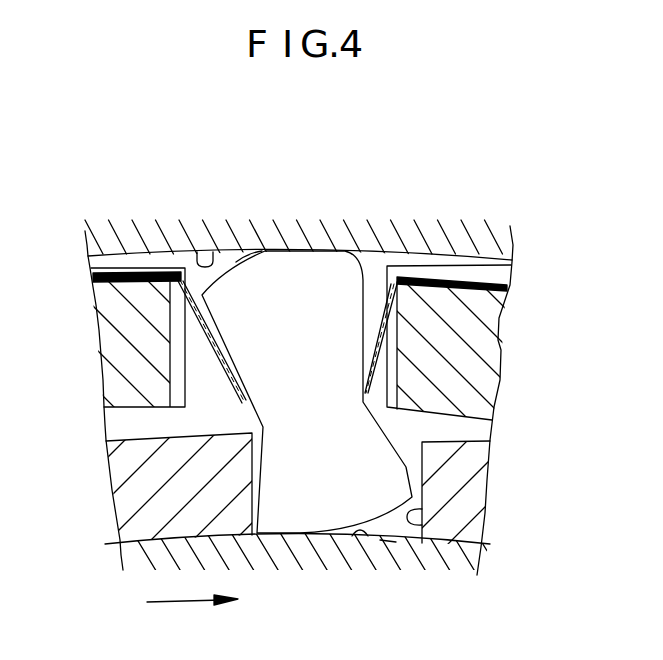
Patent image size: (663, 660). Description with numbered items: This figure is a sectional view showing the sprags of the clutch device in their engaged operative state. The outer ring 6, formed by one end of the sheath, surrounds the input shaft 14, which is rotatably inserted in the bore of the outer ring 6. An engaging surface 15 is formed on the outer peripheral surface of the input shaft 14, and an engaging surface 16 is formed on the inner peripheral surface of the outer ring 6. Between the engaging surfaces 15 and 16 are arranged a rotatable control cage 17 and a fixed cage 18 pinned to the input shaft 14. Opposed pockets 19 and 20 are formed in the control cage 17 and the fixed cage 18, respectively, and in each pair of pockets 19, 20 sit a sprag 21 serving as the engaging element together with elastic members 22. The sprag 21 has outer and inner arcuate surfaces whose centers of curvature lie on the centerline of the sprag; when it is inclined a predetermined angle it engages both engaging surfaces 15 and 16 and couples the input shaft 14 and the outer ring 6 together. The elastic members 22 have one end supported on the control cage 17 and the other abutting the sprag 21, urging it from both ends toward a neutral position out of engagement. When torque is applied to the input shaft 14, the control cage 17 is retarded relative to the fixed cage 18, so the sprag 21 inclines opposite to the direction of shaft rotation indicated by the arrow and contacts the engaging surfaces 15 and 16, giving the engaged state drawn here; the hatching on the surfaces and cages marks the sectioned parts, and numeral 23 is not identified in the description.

The outer ring 6 is at (377, 240).
The input shaft 14 is at (455, 558).
The engaging surface 15 is at (353, 538).
The engaging surface 16 is at (198, 250).
The control cage 17 is at (468, 328).
The fixed cage 18 is at (460, 476).
The pocket 19 is at (172, 339).
The pocket 20 is at (418, 523).
The sprag 21 is at (310, 278).
The elastic member 22 is at (122, 274).
The joint 23 is at (244, 252).